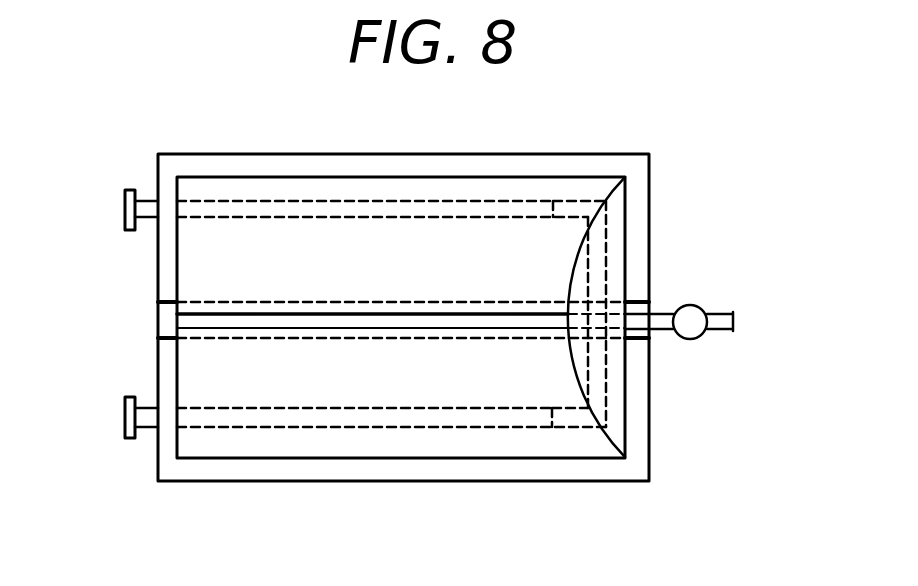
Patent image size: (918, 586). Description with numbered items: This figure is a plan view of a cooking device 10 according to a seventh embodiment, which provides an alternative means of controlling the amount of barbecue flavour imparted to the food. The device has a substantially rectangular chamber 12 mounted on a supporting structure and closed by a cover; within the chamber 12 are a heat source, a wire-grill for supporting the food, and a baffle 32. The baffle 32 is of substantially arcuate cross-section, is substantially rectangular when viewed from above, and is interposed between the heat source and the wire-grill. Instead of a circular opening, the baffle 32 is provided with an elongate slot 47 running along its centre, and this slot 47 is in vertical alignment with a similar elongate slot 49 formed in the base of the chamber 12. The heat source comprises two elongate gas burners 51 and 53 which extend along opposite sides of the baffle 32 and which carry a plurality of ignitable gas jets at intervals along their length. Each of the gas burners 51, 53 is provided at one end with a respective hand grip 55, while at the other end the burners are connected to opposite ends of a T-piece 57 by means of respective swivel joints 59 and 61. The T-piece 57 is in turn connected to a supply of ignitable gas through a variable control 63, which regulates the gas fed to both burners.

The cooking device 10 is at (592, 134).
The chamber 12 is at (650, 170).
The baffle 32 is at (322, 195).
The elongate slot 47 is at (417, 312).
The elongate slot 49 is at (160, 340).
The gas burner 51 is at (222, 196).
The gas burner 53 is at (253, 430).
The hand grip 55 is at (125, 213).
The T-piece 57 is at (613, 243).
The swivel joint 59 is at (540, 200).
The swivel joint 61 is at (548, 420).
The variable control 63 is at (688, 310).